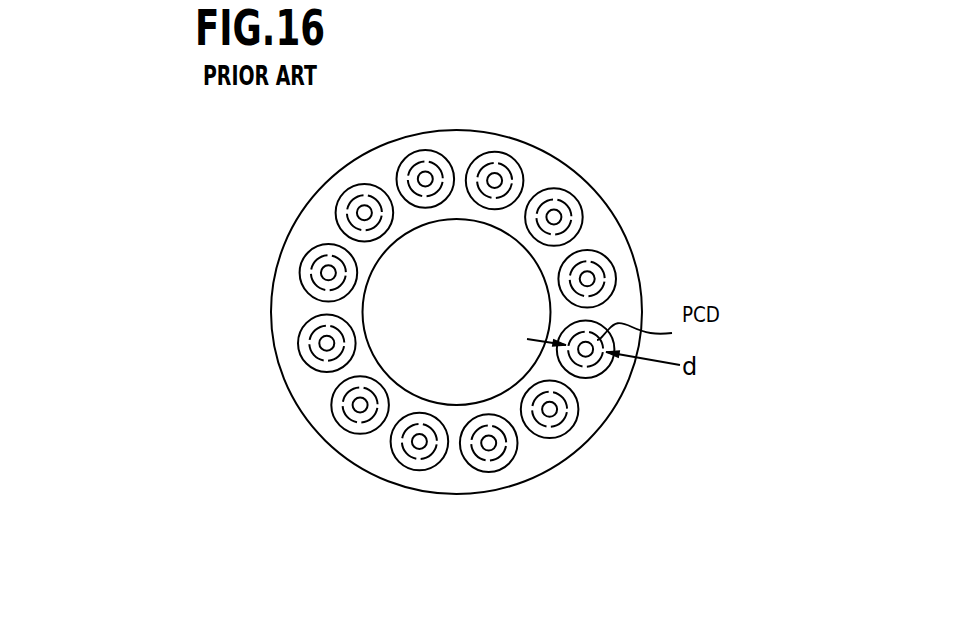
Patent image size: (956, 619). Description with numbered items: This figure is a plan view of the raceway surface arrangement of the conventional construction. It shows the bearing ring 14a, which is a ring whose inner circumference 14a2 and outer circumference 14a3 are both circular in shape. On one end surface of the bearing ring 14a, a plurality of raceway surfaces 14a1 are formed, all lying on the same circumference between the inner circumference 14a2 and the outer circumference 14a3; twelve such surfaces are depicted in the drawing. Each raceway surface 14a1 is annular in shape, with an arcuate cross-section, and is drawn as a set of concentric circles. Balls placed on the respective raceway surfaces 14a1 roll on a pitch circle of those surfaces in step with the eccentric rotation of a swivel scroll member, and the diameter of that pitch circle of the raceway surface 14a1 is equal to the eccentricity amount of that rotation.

The bearing ring 14a is at (440, 312).
The raceway surface 14a1 is at (607, 258).
The inner circumference 14a2 is at (365, 290).
The outer circumference 14a3 is at (270, 295).